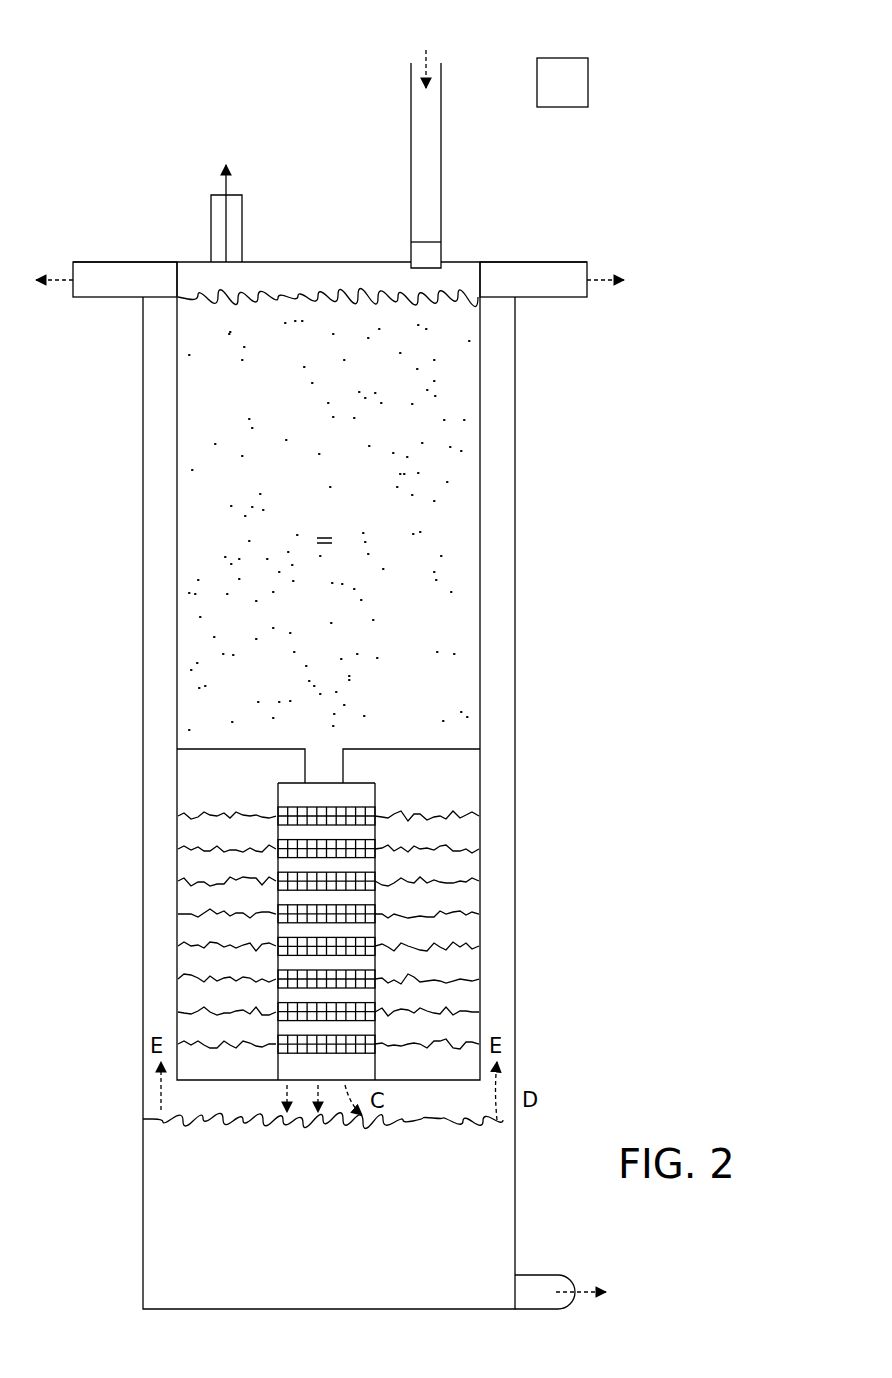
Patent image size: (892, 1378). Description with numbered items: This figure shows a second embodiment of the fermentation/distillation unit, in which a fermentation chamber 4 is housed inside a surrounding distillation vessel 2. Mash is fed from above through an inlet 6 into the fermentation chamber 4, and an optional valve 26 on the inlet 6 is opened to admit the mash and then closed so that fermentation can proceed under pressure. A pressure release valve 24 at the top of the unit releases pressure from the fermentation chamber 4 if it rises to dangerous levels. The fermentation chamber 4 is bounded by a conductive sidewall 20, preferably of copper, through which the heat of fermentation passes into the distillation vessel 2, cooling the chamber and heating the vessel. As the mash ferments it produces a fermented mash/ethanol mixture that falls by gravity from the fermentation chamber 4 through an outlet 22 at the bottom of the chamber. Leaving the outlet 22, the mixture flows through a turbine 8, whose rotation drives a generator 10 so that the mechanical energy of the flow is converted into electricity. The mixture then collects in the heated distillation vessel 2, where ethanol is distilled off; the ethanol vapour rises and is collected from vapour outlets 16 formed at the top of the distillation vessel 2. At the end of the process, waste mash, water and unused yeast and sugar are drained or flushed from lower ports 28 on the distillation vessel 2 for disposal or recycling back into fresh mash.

The distillation vessel 2 is at (509, 573).
The fermentation chamber 4 is at (447, 489).
The inlet 6 is at (446, 115).
The turbine 8 is at (298, 804).
The generator 10 is at (443, 796).
The vapour outlets 16 is at (118, 262).
The sidewall 20 is at (481, 420).
The outlet 22 is at (337, 778).
The pressure release valve 24 is at (242, 195).
The valve 26 is at (442, 248).
The lower ports 28 is at (543, 1275).